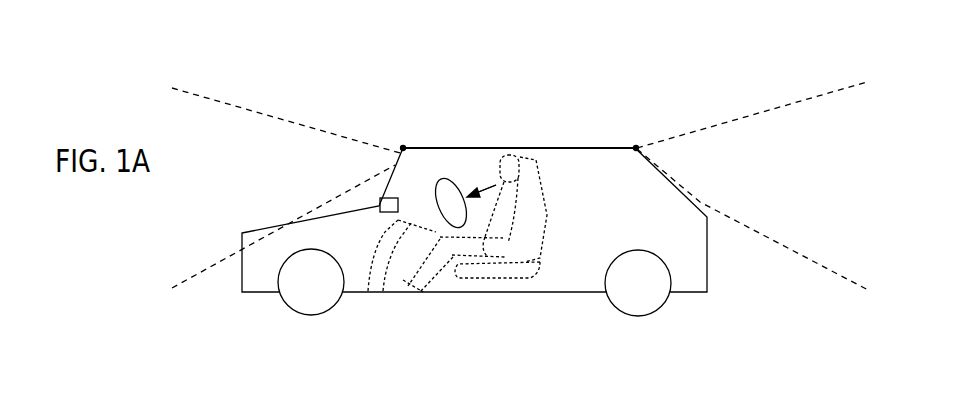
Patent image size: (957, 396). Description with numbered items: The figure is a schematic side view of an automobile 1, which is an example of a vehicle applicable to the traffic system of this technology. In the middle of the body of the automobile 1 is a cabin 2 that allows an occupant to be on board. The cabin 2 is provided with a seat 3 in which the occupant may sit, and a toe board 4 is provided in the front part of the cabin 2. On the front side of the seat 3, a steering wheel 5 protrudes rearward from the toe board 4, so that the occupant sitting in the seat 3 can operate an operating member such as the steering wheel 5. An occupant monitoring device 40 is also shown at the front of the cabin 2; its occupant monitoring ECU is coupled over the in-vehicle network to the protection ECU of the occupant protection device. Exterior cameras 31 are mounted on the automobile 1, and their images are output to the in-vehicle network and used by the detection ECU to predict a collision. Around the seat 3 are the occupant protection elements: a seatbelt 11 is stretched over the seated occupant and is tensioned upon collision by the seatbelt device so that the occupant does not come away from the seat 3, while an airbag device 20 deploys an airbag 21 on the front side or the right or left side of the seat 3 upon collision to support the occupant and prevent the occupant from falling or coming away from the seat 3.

The automobile 1 is at (287, 151).
The cabin 2 is at (582, 170).
The seat 3 is at (475, 272).
The toe board 4 is at (372, 291).
The steering wheel 5 is at (432, 183).
The seatbelt 11 is at (535, 158).
The airbag device 20 is at (486, 189).
The airbag 21 is at (443, 178).
The exterior camera 31 is at (404, 148).
The occupant monitoring device 40 is at (372, 201).